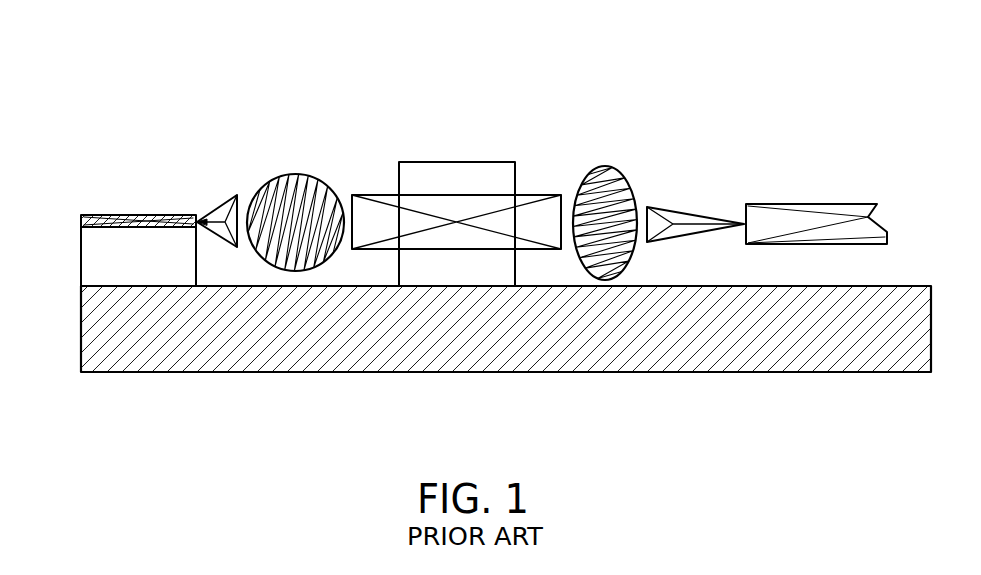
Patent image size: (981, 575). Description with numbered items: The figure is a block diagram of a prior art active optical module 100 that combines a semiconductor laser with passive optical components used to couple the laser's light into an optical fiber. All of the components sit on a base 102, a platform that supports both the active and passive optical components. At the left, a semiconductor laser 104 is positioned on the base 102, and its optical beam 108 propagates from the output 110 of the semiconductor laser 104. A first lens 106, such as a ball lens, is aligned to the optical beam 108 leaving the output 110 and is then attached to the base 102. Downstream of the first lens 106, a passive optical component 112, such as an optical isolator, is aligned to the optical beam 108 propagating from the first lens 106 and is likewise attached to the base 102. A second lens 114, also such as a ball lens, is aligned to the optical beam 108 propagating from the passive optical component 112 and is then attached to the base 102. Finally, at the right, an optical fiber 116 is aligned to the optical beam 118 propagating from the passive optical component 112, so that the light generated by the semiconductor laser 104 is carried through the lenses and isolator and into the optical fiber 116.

The active optical module 100 is at (563, 55).
The base 102 is at (81, 316).
The semiconductor laser 104 is at (92, 213).
The first lens 106 is at (298, 174).
The optical beam 108 is at (211, 238).
The output 110 is at (206, 214).
The passive optical component 112 is at (440, 161).
The second lens 114 is at (616, 166).
The optical fiber 116 is at (787, 203).
The optical beam 118 is at (675, 207).